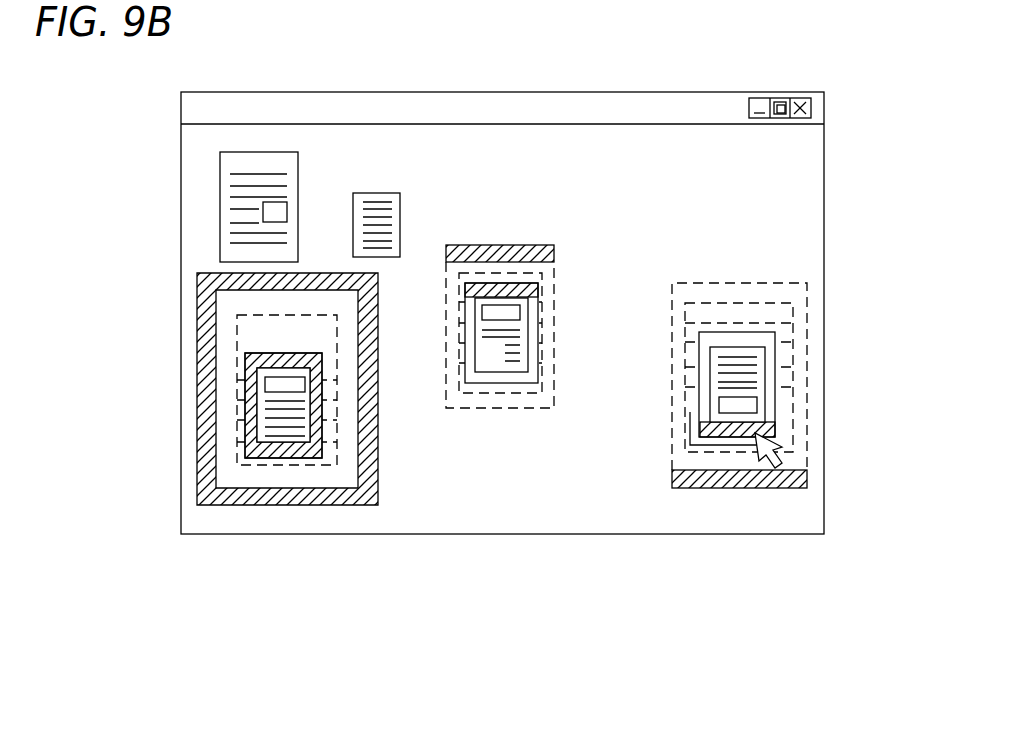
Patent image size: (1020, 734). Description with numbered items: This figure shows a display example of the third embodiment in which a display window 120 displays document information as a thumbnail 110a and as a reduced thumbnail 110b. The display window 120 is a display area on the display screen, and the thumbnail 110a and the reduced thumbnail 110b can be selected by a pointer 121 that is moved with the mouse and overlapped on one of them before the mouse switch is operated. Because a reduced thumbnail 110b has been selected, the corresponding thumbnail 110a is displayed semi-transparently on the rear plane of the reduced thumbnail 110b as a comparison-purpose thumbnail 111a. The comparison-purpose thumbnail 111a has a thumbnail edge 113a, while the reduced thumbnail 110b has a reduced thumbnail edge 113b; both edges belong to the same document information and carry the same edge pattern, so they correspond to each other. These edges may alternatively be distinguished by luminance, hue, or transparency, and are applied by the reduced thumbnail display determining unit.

The display window 120 is at (824, 178).
The thumbnail 110a is at (258, 152).
The reduced thumbnail 110b is at (265, 412).
The comparison-purpose thumbnail 111a is at (336, 478).
The thumbnail edge 113a is at (228, 500).
The reduced thumbnail edge 113b is at (280, 448).
The pointer 121 is at (790, 458).